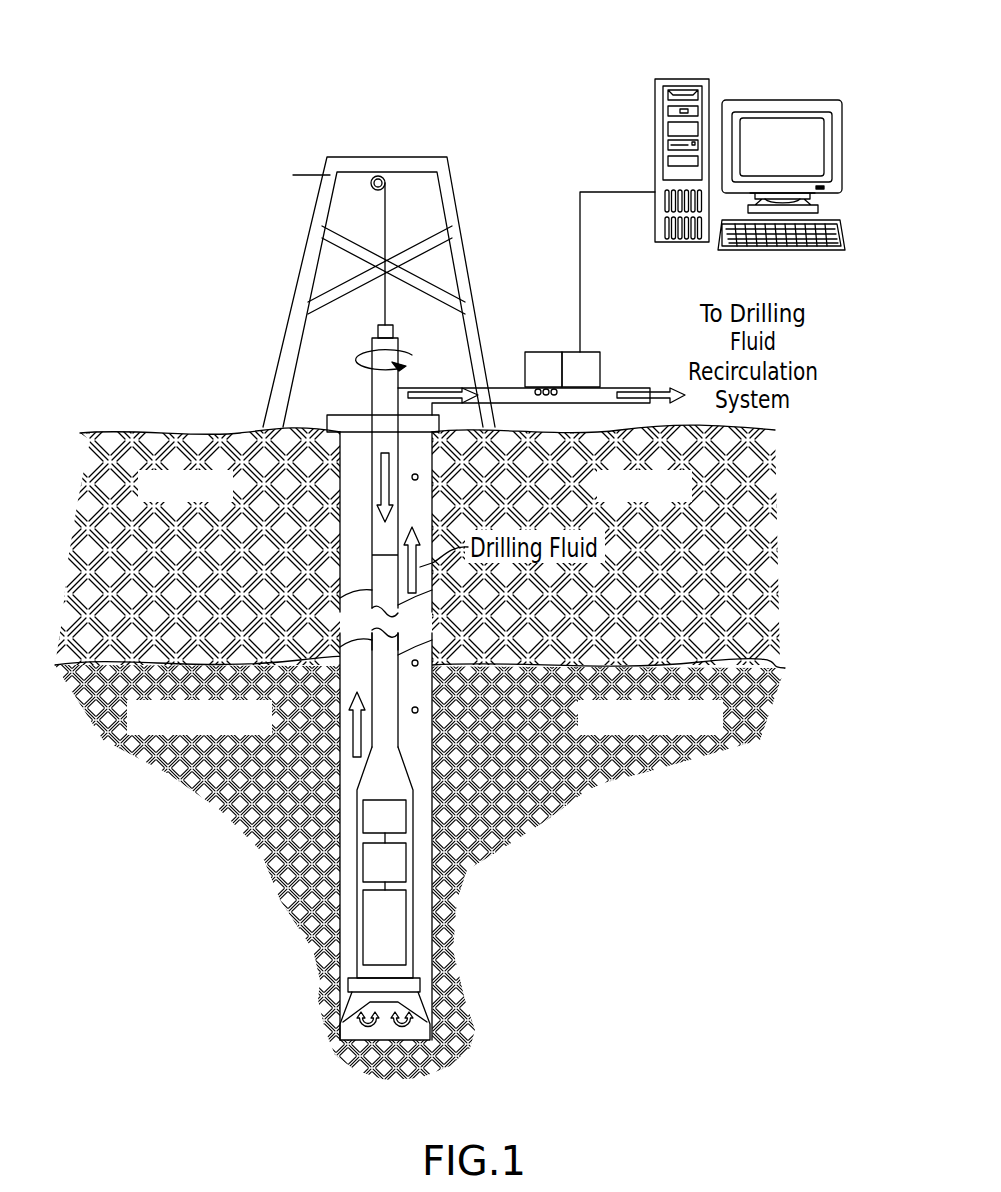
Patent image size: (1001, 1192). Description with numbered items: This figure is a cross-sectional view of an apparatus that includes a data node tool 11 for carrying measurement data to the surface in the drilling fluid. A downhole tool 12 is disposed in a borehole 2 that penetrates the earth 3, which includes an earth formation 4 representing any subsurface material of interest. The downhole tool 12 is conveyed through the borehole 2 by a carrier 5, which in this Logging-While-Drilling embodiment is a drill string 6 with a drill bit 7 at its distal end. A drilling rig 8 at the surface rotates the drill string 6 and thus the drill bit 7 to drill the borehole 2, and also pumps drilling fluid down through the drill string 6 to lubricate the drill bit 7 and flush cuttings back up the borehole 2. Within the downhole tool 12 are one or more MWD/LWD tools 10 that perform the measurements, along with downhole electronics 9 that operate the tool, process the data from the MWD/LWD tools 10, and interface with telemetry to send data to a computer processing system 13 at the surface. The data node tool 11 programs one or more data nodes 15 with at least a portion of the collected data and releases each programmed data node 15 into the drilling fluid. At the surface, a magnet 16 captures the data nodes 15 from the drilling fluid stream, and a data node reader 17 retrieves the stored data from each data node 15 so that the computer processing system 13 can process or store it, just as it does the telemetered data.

The borehole 2 is at (345, 573).
The earth 3 is at (687, 500).
The earth formation 4 is at (717, 732).
The carrier 5 is at (372, 650).
The drill string 6 is at (372, 531).
The drill bit 7 is at (356, 1004).
The drilling rig 8 is at (248, 381).
The downhole electronics 9 is at (394, 829).
The MWD/LWD tools 10 is at (398, 874).
The data node tool 11 is at (398, 920).
The downhole tool 12 is at (436, 862).
The computer processing system 13 is at (692, 79).
The data node 15 is at (415, 474).
The magnet 16 is at (556, 383).
The data node reader 17 is at (594, 383).